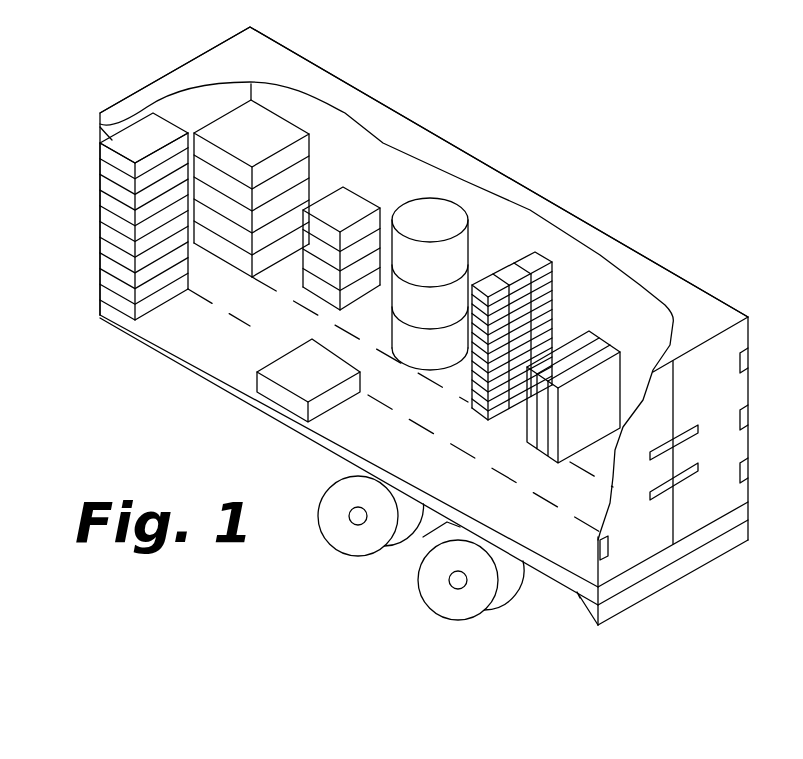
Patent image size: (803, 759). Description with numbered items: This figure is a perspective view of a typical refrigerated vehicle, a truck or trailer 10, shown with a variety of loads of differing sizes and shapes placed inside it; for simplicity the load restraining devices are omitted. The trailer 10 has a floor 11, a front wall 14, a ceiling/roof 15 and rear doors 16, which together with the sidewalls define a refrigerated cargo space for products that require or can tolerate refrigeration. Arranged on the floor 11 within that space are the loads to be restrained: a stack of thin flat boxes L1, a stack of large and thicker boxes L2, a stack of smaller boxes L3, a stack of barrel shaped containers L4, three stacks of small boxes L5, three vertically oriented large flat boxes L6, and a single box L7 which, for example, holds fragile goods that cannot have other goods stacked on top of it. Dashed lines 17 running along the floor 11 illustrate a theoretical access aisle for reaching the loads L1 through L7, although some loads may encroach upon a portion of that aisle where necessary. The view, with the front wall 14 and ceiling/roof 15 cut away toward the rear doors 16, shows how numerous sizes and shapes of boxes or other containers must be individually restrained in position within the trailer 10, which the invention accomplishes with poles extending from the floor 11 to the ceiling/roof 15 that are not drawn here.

The refrigerated truck or trailer 10 is at (460, 127).
The floor 11 is at (215, 347).
The front wall 14 is at (195, 110).
The ceiling/roof 15 is at (254, 64).
The rear doors 16 is at (685, 500).
The dashed lines 17 is at (460, 398).
The stack of thin flat boxes L1 is at (114, 228).
The stack of large and thicker boxes L2 is at (277, 115).
The stack of smaller boxes L3 is at (350, 190).
The stack of barrel shaped containers L4 is at (447, 205).
The three stacks of small boxes L5 is at (537, 252).
The three vertically oriented large flat boxes L6 is at (597, 338).
The single box L7 is at (290, 380).